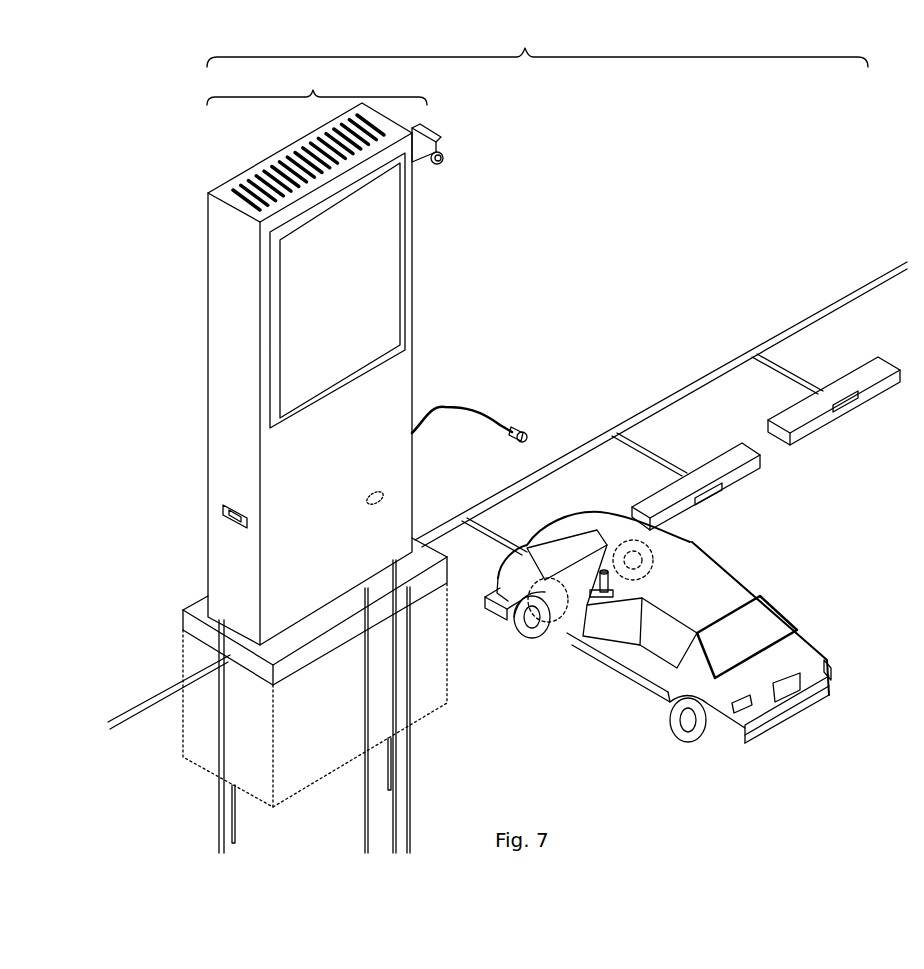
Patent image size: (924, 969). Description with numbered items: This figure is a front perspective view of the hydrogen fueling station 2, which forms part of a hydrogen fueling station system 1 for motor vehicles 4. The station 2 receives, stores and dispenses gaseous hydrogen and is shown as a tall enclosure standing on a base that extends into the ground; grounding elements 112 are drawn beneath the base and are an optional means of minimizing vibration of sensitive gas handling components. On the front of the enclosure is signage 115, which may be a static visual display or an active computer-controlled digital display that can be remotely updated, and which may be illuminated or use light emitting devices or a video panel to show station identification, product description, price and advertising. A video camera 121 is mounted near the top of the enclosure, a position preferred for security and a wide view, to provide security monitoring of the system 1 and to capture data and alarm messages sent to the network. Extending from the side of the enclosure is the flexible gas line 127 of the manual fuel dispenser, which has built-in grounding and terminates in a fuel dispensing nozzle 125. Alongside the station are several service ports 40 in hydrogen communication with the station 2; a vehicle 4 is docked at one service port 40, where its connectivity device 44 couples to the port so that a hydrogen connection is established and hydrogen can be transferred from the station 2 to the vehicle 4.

The hydrogen fueling station system 1 is at (537, 46).
The hydrogen fueling station 2 is at (317, 359).
The vehicle 4 is at (737, 587).
The service port 40 is at (853, 418).
The connectivity device 44 is at (588, 585).
The grounding elements 112 is at (390, 777).
The signage 115 is at (385, 287).
The video camera 121 is at (443, 152).
The fuel dispensing nozzle 125 is at (525, 423).
The flexible gas line 127 is at (480, 403).